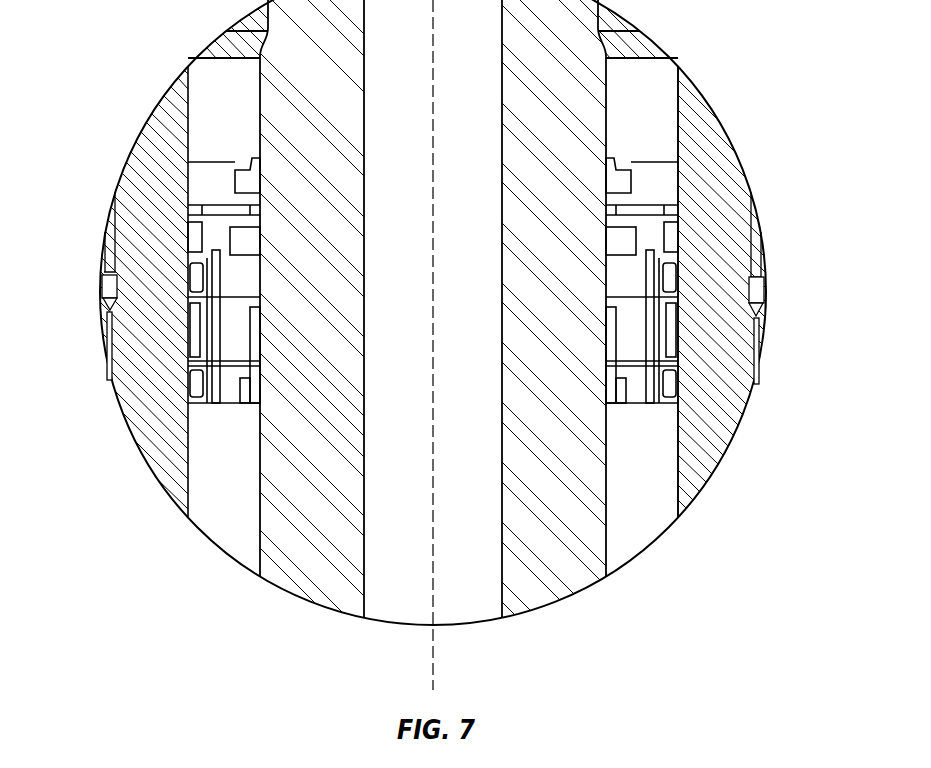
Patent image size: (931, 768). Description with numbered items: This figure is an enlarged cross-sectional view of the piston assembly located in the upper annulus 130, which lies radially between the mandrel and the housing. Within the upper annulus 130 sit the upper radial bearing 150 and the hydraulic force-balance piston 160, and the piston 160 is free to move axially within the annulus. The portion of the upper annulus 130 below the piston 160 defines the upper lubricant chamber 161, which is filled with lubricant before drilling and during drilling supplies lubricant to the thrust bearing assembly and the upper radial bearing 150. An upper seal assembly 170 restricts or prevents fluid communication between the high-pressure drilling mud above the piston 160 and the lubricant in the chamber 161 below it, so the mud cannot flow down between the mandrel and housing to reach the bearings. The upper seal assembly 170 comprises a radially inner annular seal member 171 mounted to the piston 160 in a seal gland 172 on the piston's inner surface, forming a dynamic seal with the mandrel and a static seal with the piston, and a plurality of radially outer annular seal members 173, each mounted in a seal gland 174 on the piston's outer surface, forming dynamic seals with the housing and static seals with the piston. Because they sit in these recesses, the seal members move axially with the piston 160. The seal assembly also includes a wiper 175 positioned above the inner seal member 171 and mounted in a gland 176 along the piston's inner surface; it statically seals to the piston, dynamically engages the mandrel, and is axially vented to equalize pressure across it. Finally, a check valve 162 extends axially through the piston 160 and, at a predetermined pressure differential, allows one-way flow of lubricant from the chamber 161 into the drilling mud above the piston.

The upper annulus 130 is at (644, 78).
The upper radial bearing 150 is at (195, 278).
The hydraulic force-balance piston 160 is at (623, 288).
The upper lubricant chamber 161 is at (663, 487).
The check valve 162 is at (650, 365).
The upper seal assembly 170 is at (704, 180).
The inner annular seal member 171 is at (235, 182).
The seal gland 172 is at (677, 245).
The outer annular seal members 173 is at (240, 240).
The seal gland 174 is at (193, 383).
The wiper 175 is at (188, 152).
The gland 176 is at (630, 182).